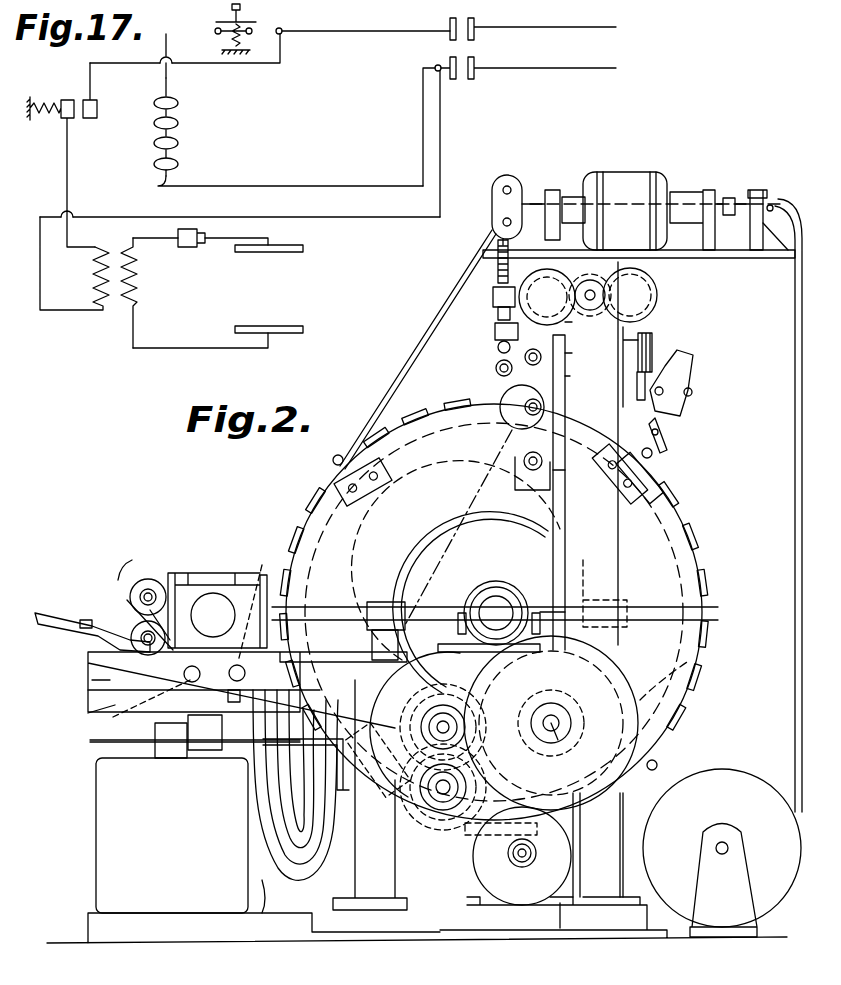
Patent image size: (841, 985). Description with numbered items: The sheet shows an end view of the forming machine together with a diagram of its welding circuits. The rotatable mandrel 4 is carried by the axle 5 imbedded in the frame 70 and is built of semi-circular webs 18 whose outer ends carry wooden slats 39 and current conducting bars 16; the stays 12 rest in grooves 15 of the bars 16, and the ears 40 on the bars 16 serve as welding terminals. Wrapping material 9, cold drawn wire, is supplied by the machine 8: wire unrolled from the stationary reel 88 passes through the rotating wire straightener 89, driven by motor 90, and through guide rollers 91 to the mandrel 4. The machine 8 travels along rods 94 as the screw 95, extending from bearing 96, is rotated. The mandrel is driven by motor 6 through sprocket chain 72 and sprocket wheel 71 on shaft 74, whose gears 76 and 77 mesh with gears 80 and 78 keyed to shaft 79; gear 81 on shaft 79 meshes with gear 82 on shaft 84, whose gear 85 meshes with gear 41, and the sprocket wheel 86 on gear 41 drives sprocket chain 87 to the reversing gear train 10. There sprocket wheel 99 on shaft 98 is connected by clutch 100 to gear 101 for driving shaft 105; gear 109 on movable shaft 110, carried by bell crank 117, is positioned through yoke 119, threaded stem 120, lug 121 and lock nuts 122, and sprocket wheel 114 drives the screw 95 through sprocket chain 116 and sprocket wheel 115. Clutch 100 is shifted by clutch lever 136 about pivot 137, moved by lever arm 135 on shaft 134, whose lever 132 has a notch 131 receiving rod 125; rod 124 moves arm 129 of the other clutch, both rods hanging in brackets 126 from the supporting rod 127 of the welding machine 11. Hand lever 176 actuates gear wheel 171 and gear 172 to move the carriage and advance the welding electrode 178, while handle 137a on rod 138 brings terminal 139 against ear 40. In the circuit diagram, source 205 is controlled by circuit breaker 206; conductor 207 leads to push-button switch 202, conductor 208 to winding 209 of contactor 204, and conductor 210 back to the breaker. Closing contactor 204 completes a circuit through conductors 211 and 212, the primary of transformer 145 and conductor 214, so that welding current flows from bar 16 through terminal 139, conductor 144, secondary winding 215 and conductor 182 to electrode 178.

In FIG. 17, the push-button switch 202 is at (258, 20).
In FIG. 2, the push-button switch 202 is at (86, 620).
In FIG. 17, the circuit breaker 206 is at (466, 20).
In FIG. 17, the source of electromotive force 205 is at (498, 58).
In FIG. 17, the conductor 207 is at (372, 31).
In FIG. 17, the conductor 211 is at (282, 63).
In FIG. 17, the conductor 208 is at (172, 72).
In FIG. 17, the winding 209 is at (178, 122).
In FIG. 17, the conductor 210 is at (316, 186).
In FIG. 17, the contactor 204 is at (76, 118).
In FIG. 2, the contactor 204 is at (693, 375).
In FIG. 17, the conductor 212 is at (68, 194).
In FIG. 17, the conductor 214 is at (276, 217).
In FIG. 17, the transformer 145 is at (105, 312).
In FIG. 2, the transformer 145 is at (172, 835).
In FIG. 17, the secondary winding 215 is at (137, 286).
In FIG. 17, the electrical conductor 144 is at (160, 240).
In FIG. 2, the electrical conductor 144 is at (262, 916).
In FIG. 17, the electrical terminal 139 is at (189, 247).
In FIG. 17, the ears 40 is at (210, 238).
In FIG. 17, the current conducting bars 16 is at (303, 250).
In FIG. 2, the current conducting bars 16 is at (664, 690).
In FIG. 17, the electrical conductor 182 is at (178, 348).
In FIG. 2, the electrical conductor 182 is at (326, 862).
In FIG. 17, the welding electrode 178 is at (290, 333).
In FIG. 2, the welding electrode 178 is at (330, 572).
In FIG. 2, the mandrel 4 is at (724, 501).
In FIG. 2, the reversing gear train 10 is at (610, 392).
In FIG. 2, the webs 18 is at (652, 532).
In FIG. 2, the slats 39 is at (716, 670).
In FIG. 2, the frame 70 is at (410, 575).
In FIG. 2, the gear 41 is at (456, 532).
In FIG. 2, the sprocket wheel 86 is at (462, 560).
In FIG. 2, the sprocket chain 87 is at (498, 482).
In FIG. 2, the axle 5 is at (493, 596).
In FIG. 2, the motor 90 is at (620, 180).
In FIG. 2, the machine for supplying wrapping material 8 is at (666, 190).
In FIG. 2, the wire straightener 89 is at (690, 192).
In FIG. 2, the lug 121 is at (517, 297).
In FIG. 2, the guide rollers 91 is at (470, 200).
In FIG. 2, the wrapping material 9 is at (446, 270).
In FIG. 2, the threaded stem 120 is at (492, 226).
In FIG. 2, the lock nuts 122 is at (497, 284).
In FIG. 2, the yoke 119 is at (493, 298).
In FIG. 2, the bell crank 117 is at (495, 332).
In FIG. 2, the sprocket chain 116 is at (556, 318).
In FIG. 2, the rods 94 is at (590, 308).
In FIG. 2, the bearing 96 is at (656, 282).
In FIG. 2, the screw 95 is at (610, 304).
In FIG. 2, the sprocket wheel 115 is at (572, 324).
In FIG. 2, the sprocket wheel 114 is at (572, 353).
In FIG. 2, the gear 101 is at (566, 376).
In FIG. 2, the movable shaft 110 is at (498, 347).
In FIG. 2, the gear 109 is at (496, 368).
In FIG. 2, the shaft 105 is at (500, 396).
In FIG. 2, the shaft 98 is at (523, 454).
In FIG. 2, the sprocket wheel 99 is at (520, 486).
In FIG. 2, the clutch 100 is at (553, 522).
In FIG. 2, the pivot 137 is at (566, 480).
In FIG. 2, the clutch lever 136 is at (566, 506).
In FIG. 2, the lever arm 135 is at (588, 590).
In FIG. 2, the grooves 15 is at (345, 462).
In FIG. 2, the shaft 79 is at (560, 704).
In FIG. 2, the gear 85 is at (552, 760).
In FIG. 2, the shaft 84 is at (552, 745).
In FIG. 2, the gear 76 is at (468, 730).
In FIG. 2, the shaft 74 is at (443, 800).
In FIG. 2, the gear 77 is at (436, 806).
In FIG. 2, the sprocket wheel 71 is at (434, 822).
In FIG. 2, the sprocket chain 72 is at (480, 838).
In FIG. 2, the motor 6 is at (515, 907).
In FIG. 2, the gear 82 is at (612, 816).
In FIG. 2, the stays 12 is at (658, 765).
In FIG. 2, the stationary reel 88 is at (758, 882).
In FIG. 2, the gear 81 is at (394, 658).
In FIG. 2, the gear 80 is at (356, 690).
In FIG. 2, the gear 78 is at (388, 790).
In FIG. 2, the supporting rod 127 is at (214, 612).
In FIG. 2, the gear wheel 171 is at (150, 580).
In FIG. 2, the gear 172 is at (134, 630).
In FIG. 2, the handle 137a is at (132, 596).
In FIG. 2, the welding machine 11 is at (172, 585).
In FIG. 2, the hand lever 176 is at (72, 624).
In FIG. 2, the rod 138 is at (259, 604).
In FIG. 2, the shaft 134 is at (92, 686).
In FIG. 2, the notch 131 is at (112, 708).
In FIG. 2, the rod 125 is at (151, 706).
In FIG. 2, the lever 132 is at (232, 702).
In FIG. 2, the rod 124 is at (175, 758).
In FIG. 2, the brackets 126 is at (204, 750).
In FIG. 2, the arm 129 is at (340, 842).